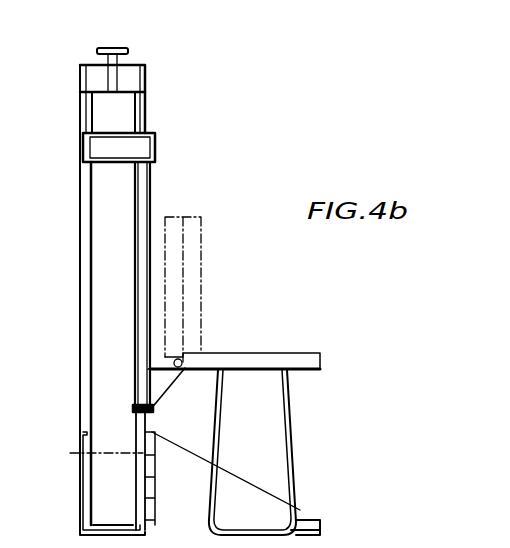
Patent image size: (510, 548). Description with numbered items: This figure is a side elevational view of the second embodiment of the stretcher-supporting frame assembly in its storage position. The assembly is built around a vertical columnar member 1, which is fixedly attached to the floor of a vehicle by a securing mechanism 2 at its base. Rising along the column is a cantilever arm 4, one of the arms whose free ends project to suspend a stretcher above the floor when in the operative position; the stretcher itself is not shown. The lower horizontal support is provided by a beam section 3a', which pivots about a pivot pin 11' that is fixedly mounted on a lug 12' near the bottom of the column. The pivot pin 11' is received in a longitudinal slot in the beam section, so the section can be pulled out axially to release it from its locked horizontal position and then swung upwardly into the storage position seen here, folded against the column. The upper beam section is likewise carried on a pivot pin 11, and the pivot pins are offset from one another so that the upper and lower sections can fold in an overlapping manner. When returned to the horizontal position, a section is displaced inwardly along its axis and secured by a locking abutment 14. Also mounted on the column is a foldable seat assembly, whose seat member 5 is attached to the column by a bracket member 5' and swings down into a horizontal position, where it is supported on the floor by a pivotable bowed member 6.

The vertical columnar member 1 is at (88, 240).
The securing mechanism 2 is at (300, 527).
The lower beam section 3a' is at (85, 399).
The cantilever arm 4 is at (148, 210).
The seat member 5 is at (234, 284).
The bracket member 5' is at (175, 392).
The pivotable bowed member 6 is at (290, 448).
The pivot pin 11 is at (86, 108).
The pivot pin 11' is at (87, 463).
The lug 12' is at (169, 478).
The locking abutment 14 is at (121, 47).